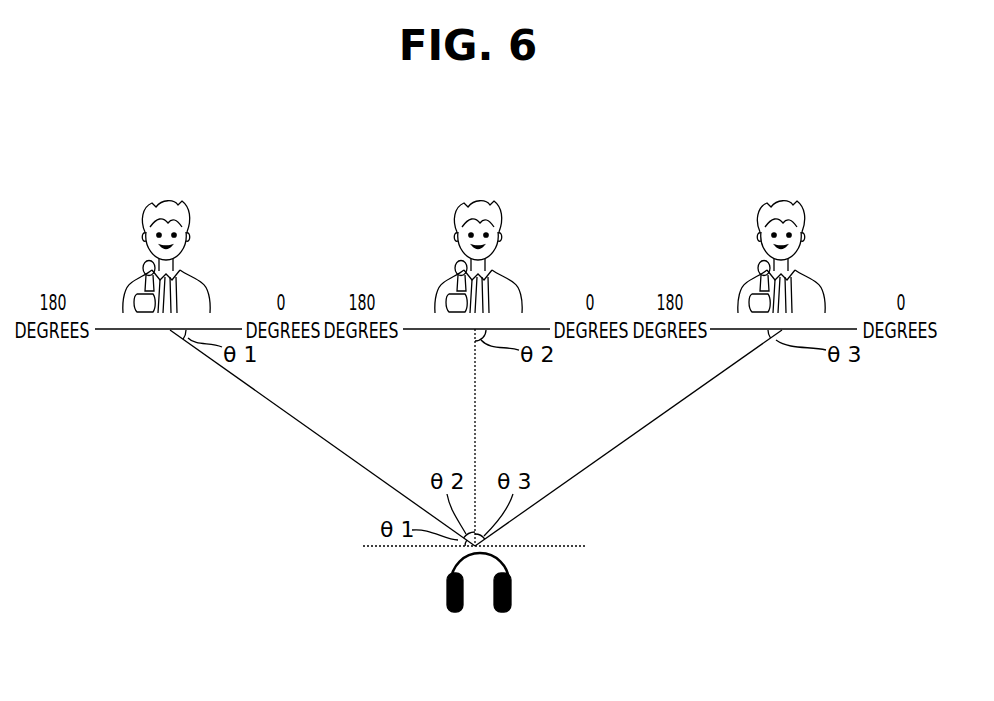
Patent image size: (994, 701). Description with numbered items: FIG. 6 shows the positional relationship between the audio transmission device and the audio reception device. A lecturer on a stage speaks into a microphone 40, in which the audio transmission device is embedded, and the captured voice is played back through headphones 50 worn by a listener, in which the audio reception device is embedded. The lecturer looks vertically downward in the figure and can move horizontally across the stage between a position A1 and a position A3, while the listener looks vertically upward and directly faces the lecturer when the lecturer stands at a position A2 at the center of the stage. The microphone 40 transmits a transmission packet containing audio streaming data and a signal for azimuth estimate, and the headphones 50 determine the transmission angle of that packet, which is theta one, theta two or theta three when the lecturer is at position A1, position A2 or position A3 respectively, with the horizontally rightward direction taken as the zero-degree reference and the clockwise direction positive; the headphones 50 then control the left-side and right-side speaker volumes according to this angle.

The microphone 40 is at (142, 267).
The headphones 50 is at (509, 568).
The position A1 is at (166, 240).
The position A2 is at (478, 240).
The position A3 is at (781, 240).